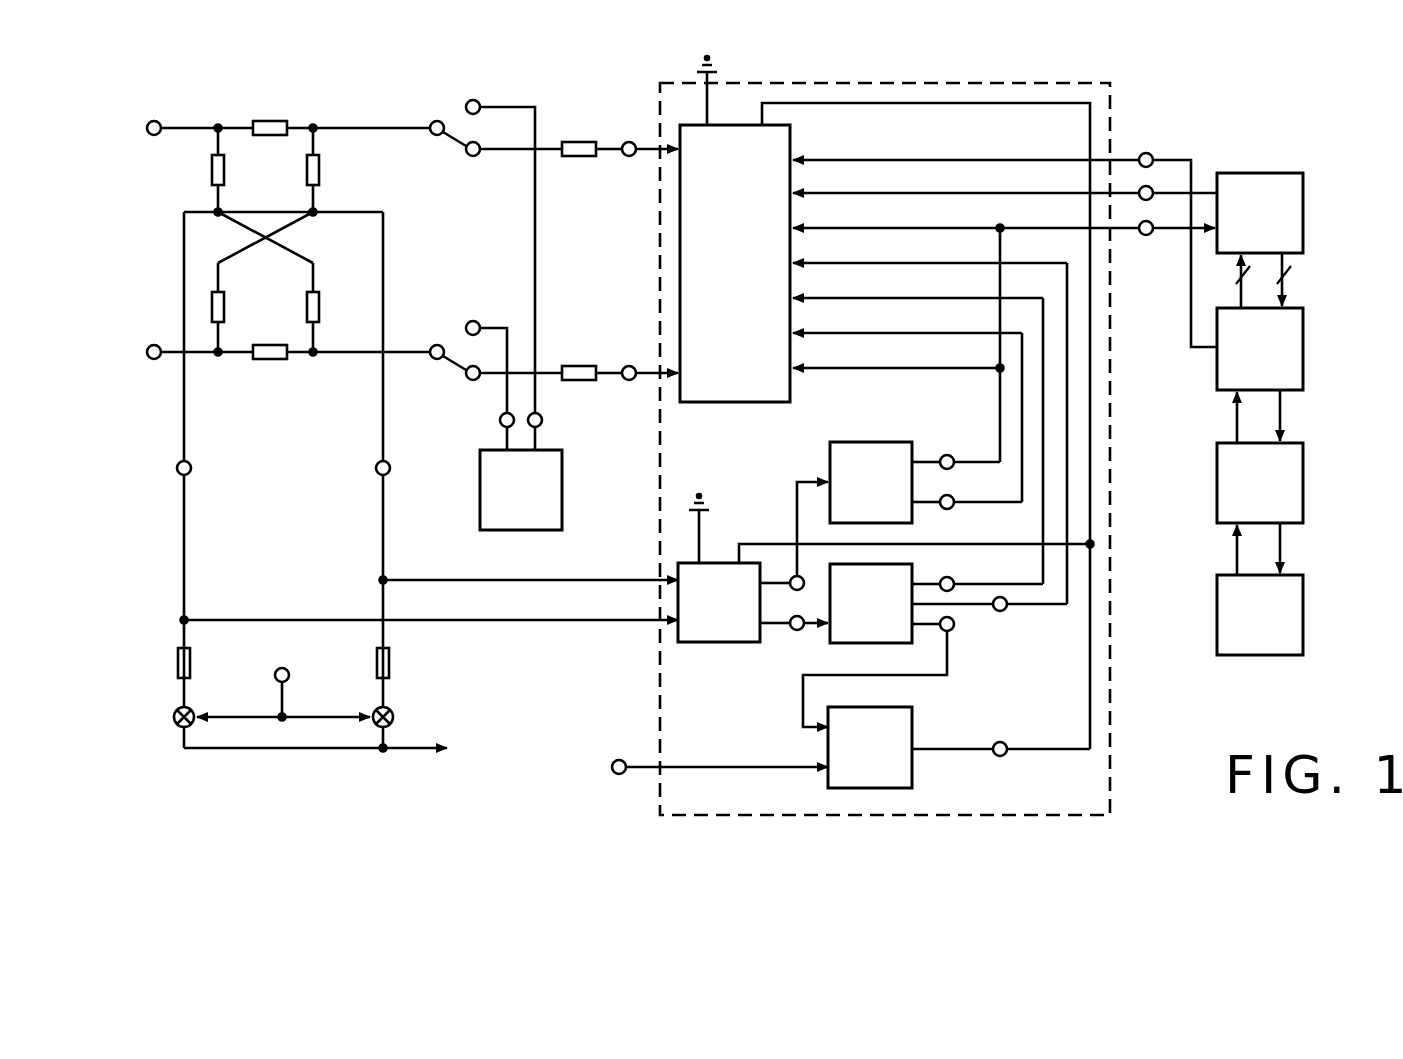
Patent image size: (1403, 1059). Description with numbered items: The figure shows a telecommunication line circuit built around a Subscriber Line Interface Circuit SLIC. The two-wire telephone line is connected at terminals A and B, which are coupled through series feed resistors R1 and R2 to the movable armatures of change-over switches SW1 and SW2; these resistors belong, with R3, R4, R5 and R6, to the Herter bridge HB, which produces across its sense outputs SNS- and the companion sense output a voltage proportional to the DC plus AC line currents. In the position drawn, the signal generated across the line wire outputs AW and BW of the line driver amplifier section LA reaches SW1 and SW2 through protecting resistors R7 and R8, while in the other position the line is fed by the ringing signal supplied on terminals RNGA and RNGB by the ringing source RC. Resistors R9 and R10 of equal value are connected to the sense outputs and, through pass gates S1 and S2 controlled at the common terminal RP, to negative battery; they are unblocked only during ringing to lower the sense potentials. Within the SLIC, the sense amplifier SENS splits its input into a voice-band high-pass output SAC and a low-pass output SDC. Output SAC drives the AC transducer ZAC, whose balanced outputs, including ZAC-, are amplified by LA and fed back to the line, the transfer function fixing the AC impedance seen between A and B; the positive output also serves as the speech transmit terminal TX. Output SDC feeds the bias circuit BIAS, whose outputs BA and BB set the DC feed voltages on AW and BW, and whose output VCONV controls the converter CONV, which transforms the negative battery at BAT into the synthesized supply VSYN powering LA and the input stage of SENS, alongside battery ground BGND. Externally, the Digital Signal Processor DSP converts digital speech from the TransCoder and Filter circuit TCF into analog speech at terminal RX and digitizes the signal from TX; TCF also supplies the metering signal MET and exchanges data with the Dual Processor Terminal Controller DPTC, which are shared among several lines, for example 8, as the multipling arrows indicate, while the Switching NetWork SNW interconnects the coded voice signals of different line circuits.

The terminal A is at (168, 130).
The terminal B is at (168, 354).
The series feed resistor R1 is at (285, 112).
The series feed resistor R2 is at (283, 370).
The resistor R3 is at (195, 172).
The resistor R4 is at (331, 309).
The resistor R5 is at (331, 172).
The resistor R6 is at (235, 309).
The protecting resistor R7 is at (589, 135).
The protecting resistor R8 is at (589, 360).
The resistor R9 is at (401, 628).
The resistor R10 is at (208, 648).
The Herter bridge HB is at (283, 467).
The sense output SNS- is at (344, 470).
The common terminal RP is at (283, 681).
The pass gate S1 is at (401, 719).
The pass gate S2 is at (160, 719).
The change-over switch SW1 is at (437, 243).
The change-over switch SW2 is at (437, 367).
The line wire output AW is at (641, 135).
The line wire output BW is at (641, 357).
The ringing terminal RNGA is at (466, 431).
The ringing terminal RNGB is at (569, 431).
The ringing source RC is at (521, 490).
The Subscriber Line Interface Circuit SLIC is at (940, 83).
The line driver amplifier section LA is at (735, 263).
The battery ground BGND is at (695, 294).
The metering signal MET is at (1178, 237).
The speech receive terminal RX is at (1178, 184).
The speech transmit terminal TX is at (1177, 218).
The AC transducer ZAC is at (854, 509).
The balanced output ZAC- is at (967, 517).
The sense amplifier SENS is at (719, 602).
The output SAC is at (786, 596).
The output SDC is at (794, 641).
The bias circuit BIAS is at (871, 603).
The bias output BA is at (977, 574).
The bias output BB is at (989, 616).
The output VCONV is at (919, 672).
The converter CONV is at (870, 747).
The battery input terminal BAT is at (708, 751).
The converter output VSYN is at (1001, 734).
The Digital Signal Processor DSP is at (1260, 213).
The number of lines 8 is at (1271, 280).
The TransCoder and Filter circuit TCF is at (1260, 349).
The Dual Processor Terminal Controller DPTC is at (1260, 483).
The Switching NetWork SNW is at (1260, 615).